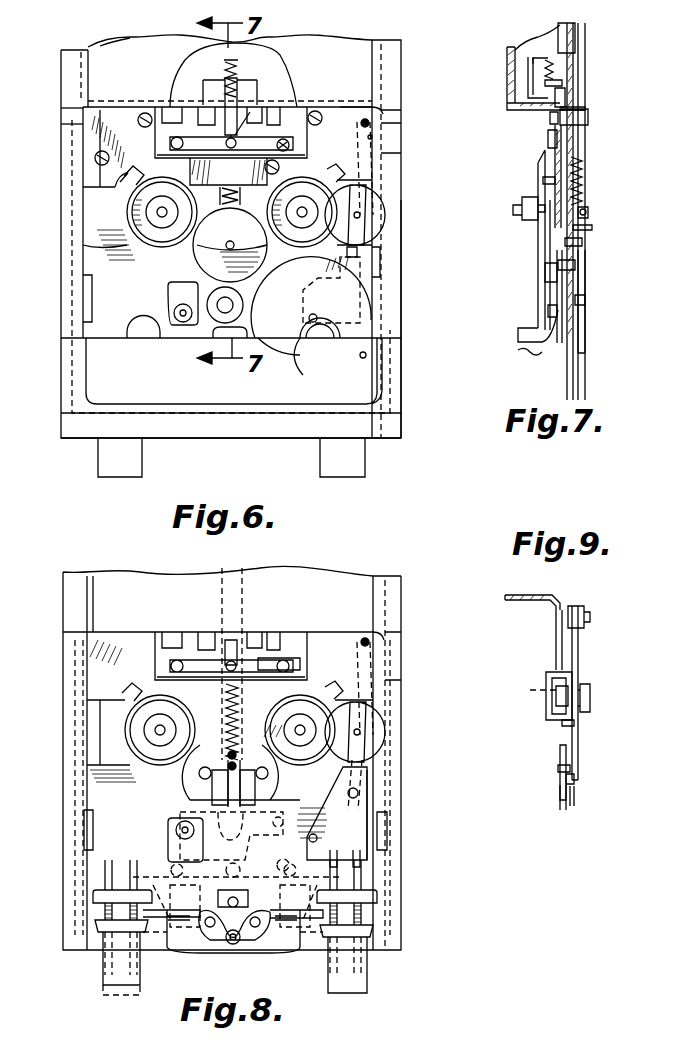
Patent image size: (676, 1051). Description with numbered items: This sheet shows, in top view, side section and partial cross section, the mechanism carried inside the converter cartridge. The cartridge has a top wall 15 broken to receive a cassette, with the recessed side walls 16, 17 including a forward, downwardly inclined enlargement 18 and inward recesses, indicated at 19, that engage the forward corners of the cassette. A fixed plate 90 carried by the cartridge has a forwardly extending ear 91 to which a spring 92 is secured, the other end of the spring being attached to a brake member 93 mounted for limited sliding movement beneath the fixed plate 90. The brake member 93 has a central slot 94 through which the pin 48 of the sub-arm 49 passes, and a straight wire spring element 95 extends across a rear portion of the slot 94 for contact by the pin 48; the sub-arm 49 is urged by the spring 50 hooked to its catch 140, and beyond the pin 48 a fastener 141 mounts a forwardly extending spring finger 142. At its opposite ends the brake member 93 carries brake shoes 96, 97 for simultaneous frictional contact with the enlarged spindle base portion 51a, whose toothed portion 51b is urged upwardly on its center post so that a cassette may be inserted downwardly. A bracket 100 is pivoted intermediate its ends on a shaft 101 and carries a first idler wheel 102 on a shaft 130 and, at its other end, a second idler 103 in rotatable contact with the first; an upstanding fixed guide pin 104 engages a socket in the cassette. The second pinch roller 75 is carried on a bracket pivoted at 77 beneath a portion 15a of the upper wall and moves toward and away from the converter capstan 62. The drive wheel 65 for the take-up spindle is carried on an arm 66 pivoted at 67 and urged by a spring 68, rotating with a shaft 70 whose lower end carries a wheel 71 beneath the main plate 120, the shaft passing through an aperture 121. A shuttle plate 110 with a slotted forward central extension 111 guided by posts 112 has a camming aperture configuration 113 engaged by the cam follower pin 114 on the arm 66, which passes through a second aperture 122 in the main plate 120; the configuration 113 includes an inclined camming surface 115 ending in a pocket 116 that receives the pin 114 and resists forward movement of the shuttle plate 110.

In FIG. 6, the top wall 15 is at (120, 47).
In FIG. 7, the top wall 15 is at (512, 76).
In FIG. 6, the portion of the upper wall 15a is at (105, 375).
In FIG. 6, the side wall 16 is at (403, 304).
In FIG. 6, the side wall 17 is at (64, 406).
In FIG. 6, the downwardly inclined enlargement 18 is at (70, 126).
In FIG. 6, the inward recess 19 is at (70, 112).
In FIG. 6, the pin 48 is at (227, 105).
In FIG. 7, the pin 48 is at (588, 117).
In FIG. 8, the pin 48 is at (236, 648).
In FIG. 7, the sub-arm 49 is at (586, 106).
In FIG. 7, the spring 50 is at (583, 187).
In FIG. 7, the enlarged circular base portion 51a is at (543, 182).
In FIG. 7, the toothed portion 51b is at (524, 222).
In FIG. 6, the converter capstan 62 is at (309, 318).
In FIG. 8, the converter capstan 62 is at (309, 840).
In FIG. 9, the drive wheel 65 is at (548, 712).
In FIG. 9, the arm 66 is at (580, 752).
In FIG. 9, the pivot 67 is at (556, 620).
In FIG. 9, the spring 68 is at (572, 608).
In FIG. 9, the shaft 70 is at (535, 693).
In FIG. 9, the wheel 71 is at (592, 696).
In FIG. 6, the second pinch roller 75 is at (310, 360).
In FIG. 6, the pivot 77 is at (367, 355).
In FIG. 6, the fixed plate 90 is at (355, 114).
In FIG. 7, the fixed plate 90 is at (540, 160).
In FIG. 9, the fixed plate 90 is at (522, 594).
In FIG. 6, the ear 91 is at (238, 63).
In FIG. 7, the ear 91 is at (530, 42).
In FIG. 7, the spring 92 is at (556, 78).
In FIG. 6, the brake member 93 is at (302, 107).
In FIG. 6, the slot 94 is at (253, 107).
In FIG. 7, the slot 94 is at (566, 140).
In FIG. 6, the wire spring element 95 is at (266, 160).
In FIG. 7, the wire spring element 95 is at (546, 134).
In FIG. 8, the wire spring element 95 is at (278, 652).
In FIG. 6, the brake shoe 96 is at (125, 196).
In FIG. 6, the brake shoe 97 is at (352, 175).
In FIG. 6, the bracket 100 is at (240, 287).
In FIG. 7, the bracket 100 is at (548, 335).
In FIG. 7, the shaft 101 is at (575, 265).
In FIG. 6, the first idler wheel 102 is at (208, 257).
In FIG. 7, the first idler wheel 102 is at (545, 270).
In FIG. 6, the second idler 103 is at (213, 298).
In FIG. 7, the second idler 103 is at (548, 311).
In FIG. 6, the guide pin 104 is at (183, 322).
In FIG. 7, the shuttle plate 110 is at (558, 342).
In FIG. 8, the shuttle plate 110 is at (90, 802).
In FIG. 9, the shuttle plate 110 is at (560, 752).
In FIG. 8, the forward central extension 111 is at (212, 788).
In FIG. 8, the posts 112 is at (268, 773).
In FIG. 8, the camming aperture configuration 113 is at (362, 832).
In FIG. 9, the camming aperture configuration 113 is at (560, 798).
In FIG. 8, the cam follower pin 114 is at (358, 790).
In FIG. 9, the cam follower pin 114 is at (558, 770).
In FIG. 8, the camming surface 115 is at (370, 802).
In FIG. 8, the pocket 116 is at (353, 793).
In FIG. 7, the main plate 120 is at (569, 348).
In FIG. 9, the main plate 120 is at (574, 790).
In FIG. 9, the aperture 121 is at (575, 722).
In FIG. 9, the second aperture 122 is at (574, 780).
In FIG. 7, the shaft 130 is at (582, 242).
In FIG. 8, the shaft 130 is at (240, 790).
In FIG. 7, the catch 140 is at (588, 208).
In FIG. 7, the fastener 141 is at (585, 300).
In FIG. 7, the spring finger 142 is at (592, 226).